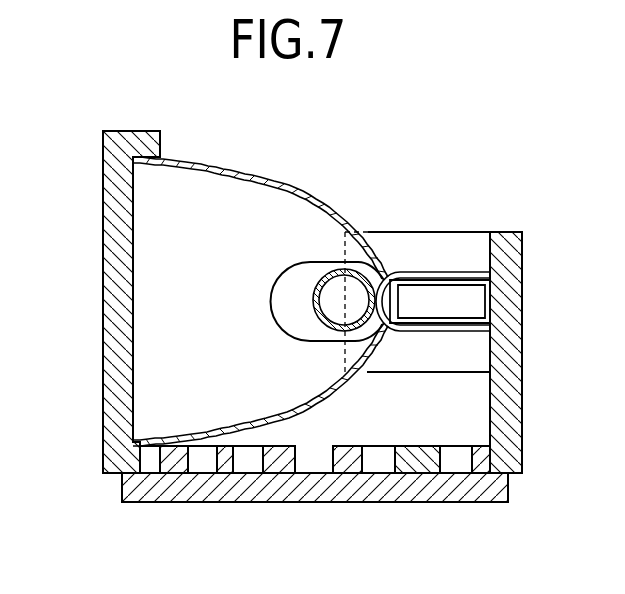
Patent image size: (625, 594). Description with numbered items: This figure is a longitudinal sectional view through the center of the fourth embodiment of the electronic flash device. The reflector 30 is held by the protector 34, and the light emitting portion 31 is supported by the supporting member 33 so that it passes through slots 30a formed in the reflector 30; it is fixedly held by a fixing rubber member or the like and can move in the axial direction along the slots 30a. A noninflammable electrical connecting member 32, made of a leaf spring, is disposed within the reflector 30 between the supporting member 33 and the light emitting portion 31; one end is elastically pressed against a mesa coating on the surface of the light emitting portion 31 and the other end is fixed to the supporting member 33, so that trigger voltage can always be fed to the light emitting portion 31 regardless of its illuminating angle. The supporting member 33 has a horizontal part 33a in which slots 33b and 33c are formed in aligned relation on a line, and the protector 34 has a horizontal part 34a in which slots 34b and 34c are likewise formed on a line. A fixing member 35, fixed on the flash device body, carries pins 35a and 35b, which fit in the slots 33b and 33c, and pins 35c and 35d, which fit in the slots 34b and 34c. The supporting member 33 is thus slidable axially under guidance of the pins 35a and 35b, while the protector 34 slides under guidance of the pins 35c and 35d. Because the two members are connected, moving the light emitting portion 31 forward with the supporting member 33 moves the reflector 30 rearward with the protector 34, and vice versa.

The reflector 30 is at (288, 184).
The slots 30a is at (300, 262).
The light emitting portion 31 is at (337, 252).
The electrical connecting member 32 is at (444, 272).
The supporting member 33 is at (522, 274).
The horizontal part 33a is at (427, 458).
The slot 33b is at (522, 447).
The slot 33c is at (404, 450).
The protector 34 is at (103, 157).
The horizontal part 34a is at (205, 468).
The slot 34b is at (223, 446).
The slot 34c is at (140, 458).
The fixing member 35 is at (497, 490).
The pin 35a is at (457, 457).
The pin 35b is at (380, 453).
The pin 35c is at (250, 462).
The pin 35d is at (170, 460).